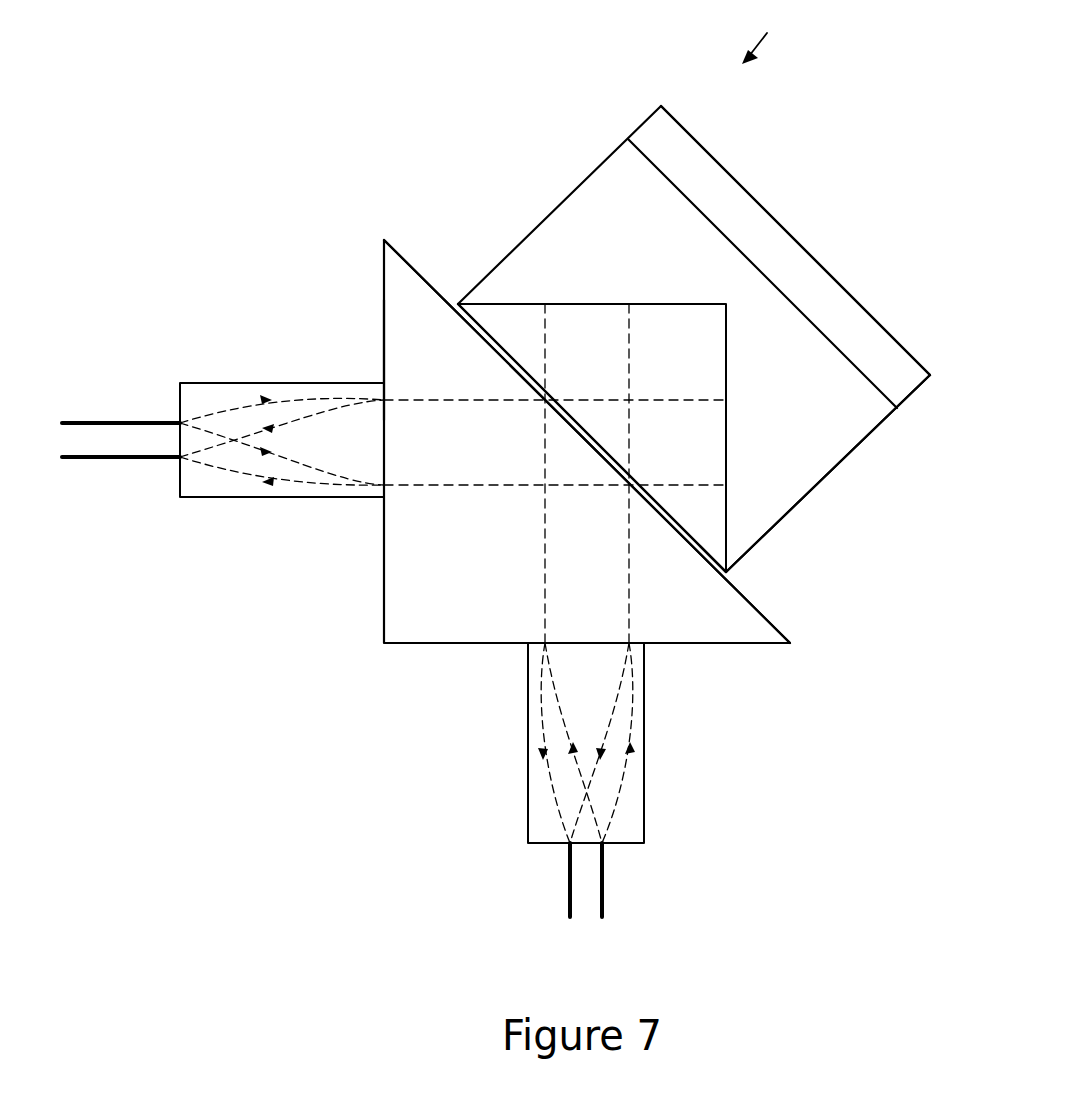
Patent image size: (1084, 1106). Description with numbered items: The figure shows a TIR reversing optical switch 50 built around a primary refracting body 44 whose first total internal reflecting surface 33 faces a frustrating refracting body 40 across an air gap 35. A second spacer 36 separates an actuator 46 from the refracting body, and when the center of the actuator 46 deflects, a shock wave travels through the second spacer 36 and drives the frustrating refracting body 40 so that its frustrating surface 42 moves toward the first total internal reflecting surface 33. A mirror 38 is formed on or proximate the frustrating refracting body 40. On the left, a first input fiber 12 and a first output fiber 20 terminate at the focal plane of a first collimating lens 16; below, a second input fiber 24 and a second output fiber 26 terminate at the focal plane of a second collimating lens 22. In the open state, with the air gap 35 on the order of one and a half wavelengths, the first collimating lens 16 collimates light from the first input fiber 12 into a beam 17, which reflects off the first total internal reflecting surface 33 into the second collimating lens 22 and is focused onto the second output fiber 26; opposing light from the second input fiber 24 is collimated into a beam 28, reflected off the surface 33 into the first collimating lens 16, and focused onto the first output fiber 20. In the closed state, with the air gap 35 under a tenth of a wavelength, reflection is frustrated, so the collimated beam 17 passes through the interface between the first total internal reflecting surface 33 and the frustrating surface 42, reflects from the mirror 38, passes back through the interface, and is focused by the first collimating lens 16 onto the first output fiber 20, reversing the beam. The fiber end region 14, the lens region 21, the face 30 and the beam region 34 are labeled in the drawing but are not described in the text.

The first input fiber 12 is at (92, 418).
The fiber end / light beams in first lens block 14 is at (180, 420).
The first collimating lens 16 is at (268, 380).
The collimated beam 17 is at (458, 393).
The first output fiber 20 is at (98, 452).
The light beams in second lens block 21 is at (548, 850).
The second collimating lens 22 is at (648, 760).
The second input fiber 24 is at (612, 903).
The second output fiber 26 is at (580, 903).
The collimated beam 28 is at (637, 545).
The prism input face 30 is at (383, 355).
The first total internal reflecting surface 33 is at (442, 297).
The beam region 34 is at (608, 303).
The air gap 35 is at (718, 576).
The second spacer 36 is at (825, 413).
The mirror 38 is at (727, 440).
The frustrating refracting body 40 is at (711, 513).
The frustrating surface 42 is at (700, 543).
The primary refracting body 44 is at (422, 620).
The actuator 46 is at (720, 195).
The TIR reversing optical switch 50 is at (770, 38).